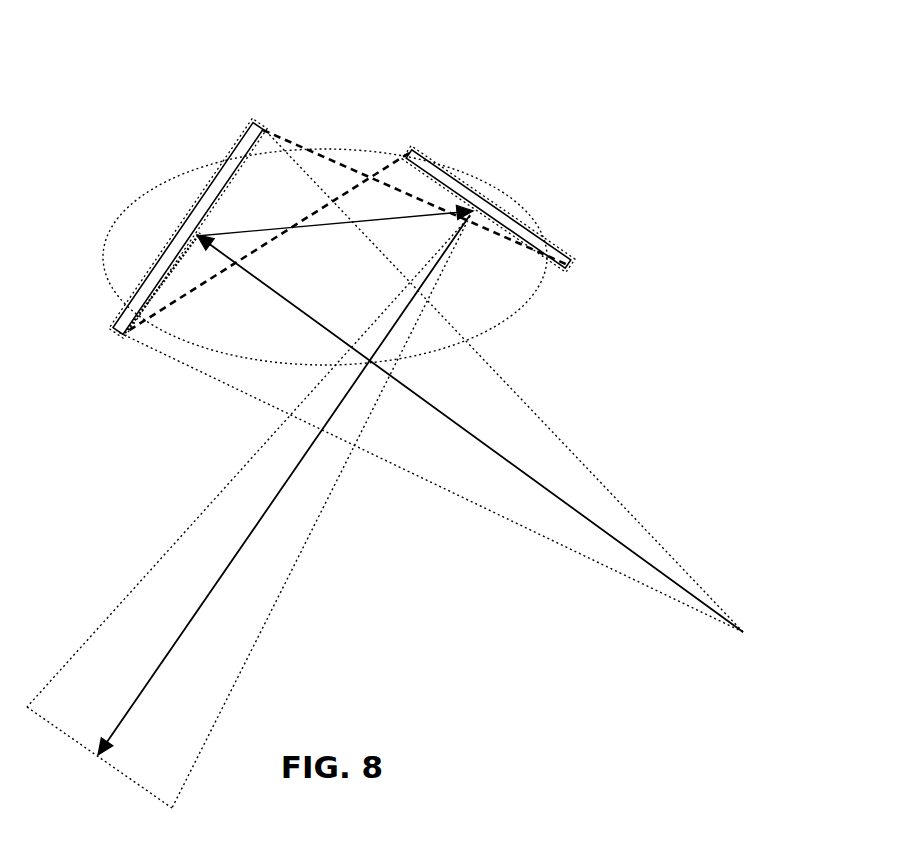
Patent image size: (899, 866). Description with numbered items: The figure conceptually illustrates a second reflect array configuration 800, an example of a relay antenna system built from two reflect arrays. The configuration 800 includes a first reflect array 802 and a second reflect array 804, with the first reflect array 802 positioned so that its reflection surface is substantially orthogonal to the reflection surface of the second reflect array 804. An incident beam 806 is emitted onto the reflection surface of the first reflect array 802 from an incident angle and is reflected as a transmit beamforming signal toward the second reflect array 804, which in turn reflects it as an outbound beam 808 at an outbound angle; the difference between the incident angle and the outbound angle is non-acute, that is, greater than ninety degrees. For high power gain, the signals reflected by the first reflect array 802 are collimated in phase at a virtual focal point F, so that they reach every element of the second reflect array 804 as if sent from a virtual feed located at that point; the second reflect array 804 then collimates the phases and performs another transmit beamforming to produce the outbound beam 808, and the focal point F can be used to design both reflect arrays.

The second reflect array configuration 800 is at (722, 61).
The first reflect array 802 is at (240, 138).
The second reflect array 804 is at (552, 253).
The incident beam 806 is at (603, 530).
The outbound beam 808 is at (218, 586).